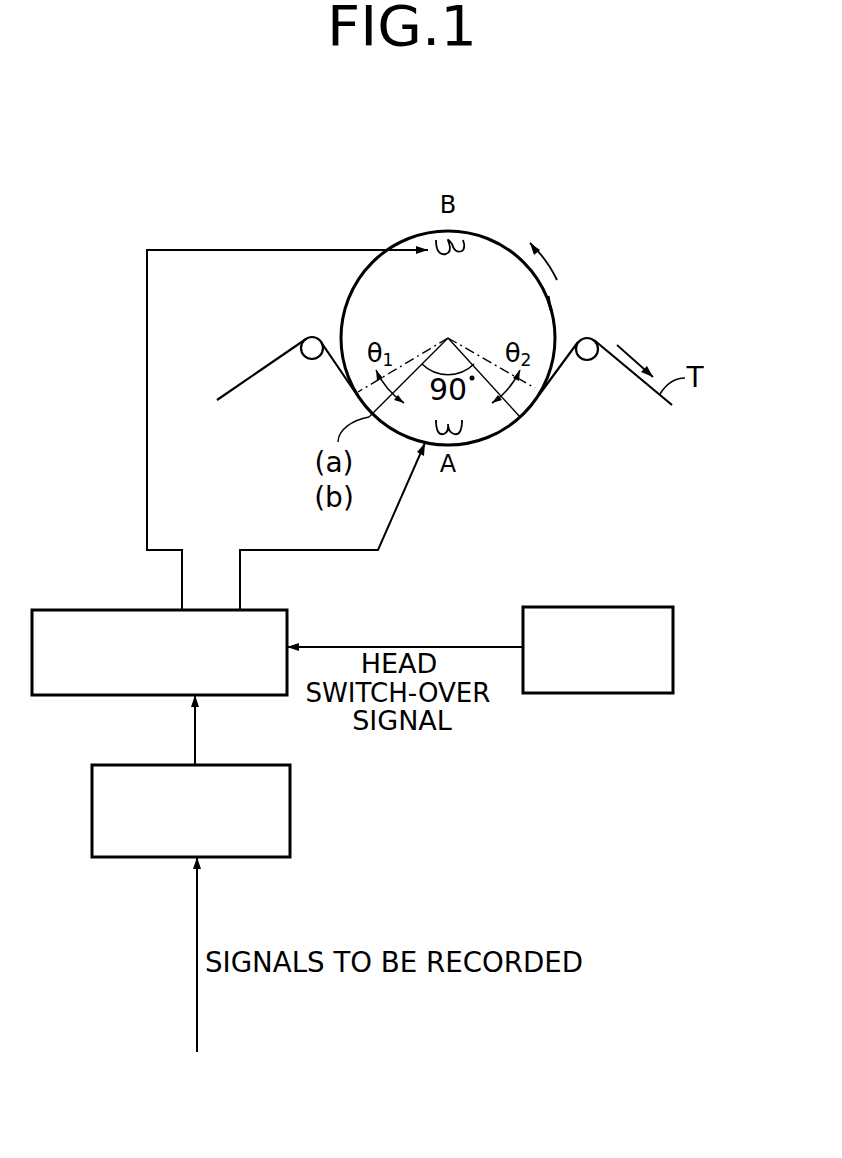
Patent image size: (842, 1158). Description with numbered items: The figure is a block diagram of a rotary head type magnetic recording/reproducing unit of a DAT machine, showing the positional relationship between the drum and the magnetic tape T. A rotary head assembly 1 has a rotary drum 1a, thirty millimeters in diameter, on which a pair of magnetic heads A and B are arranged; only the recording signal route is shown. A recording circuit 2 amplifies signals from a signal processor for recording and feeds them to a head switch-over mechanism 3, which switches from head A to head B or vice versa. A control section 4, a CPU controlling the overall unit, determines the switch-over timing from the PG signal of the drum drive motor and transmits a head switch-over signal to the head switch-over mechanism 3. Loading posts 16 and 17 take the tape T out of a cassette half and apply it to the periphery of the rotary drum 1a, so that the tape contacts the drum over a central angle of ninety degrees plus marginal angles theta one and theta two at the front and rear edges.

The rotary head assembly 1 is at (503, 240).
The rotary drum 1a is at (543, 312).
The recording circuit 2 is at (290, 816).
The head switch-over mechanism 3 is at (288, 620).
The control section 4 is at (630, 607).
The loading post 16 is at (306, 339).
The loading post 17 is at (594, 340).